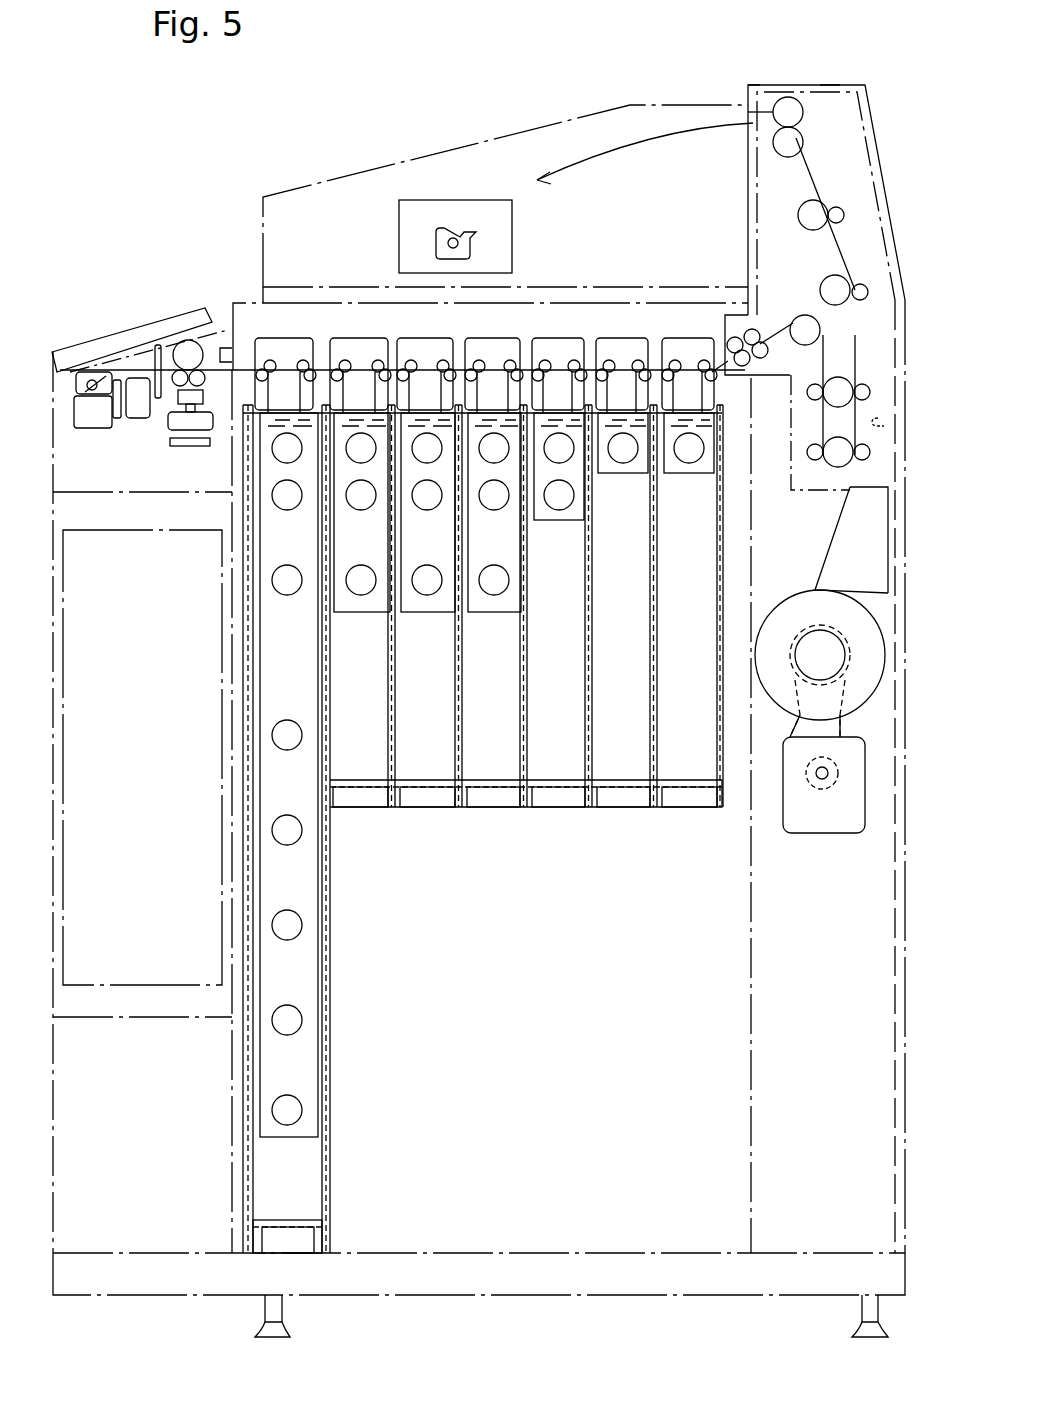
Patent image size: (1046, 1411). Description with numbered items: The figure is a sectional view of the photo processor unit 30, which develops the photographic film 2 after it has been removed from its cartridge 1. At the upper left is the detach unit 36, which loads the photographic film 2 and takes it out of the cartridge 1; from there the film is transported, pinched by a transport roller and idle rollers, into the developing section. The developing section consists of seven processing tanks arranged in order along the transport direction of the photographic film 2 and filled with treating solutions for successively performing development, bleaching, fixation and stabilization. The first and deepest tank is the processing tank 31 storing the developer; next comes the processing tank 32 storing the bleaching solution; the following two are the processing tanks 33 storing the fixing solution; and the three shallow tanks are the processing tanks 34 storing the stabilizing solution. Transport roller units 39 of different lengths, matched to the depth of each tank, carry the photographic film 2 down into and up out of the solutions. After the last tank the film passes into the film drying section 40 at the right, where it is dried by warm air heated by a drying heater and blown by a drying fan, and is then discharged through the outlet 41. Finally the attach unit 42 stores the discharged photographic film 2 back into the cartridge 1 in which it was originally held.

The cartridge 1 is at (85, 375).
The photographic film 2 is at (130, 375).
The photo processor unit 30 is at (205, 212).
The processing tank 31 is at (300, 1192).
The processing tank 32 is at (382, 765).
The processing tanks 33 is at (498, 762).
The processing tanks 34 is at (565, 762).
The detach unit 36 is at (107, 430).
The transport roller units 39 is at (285, 1110).
The film drying section 40 is at (790, 305).
The outlet 41 is at (790, 176).
The attach unit 42 is at (447, 190).